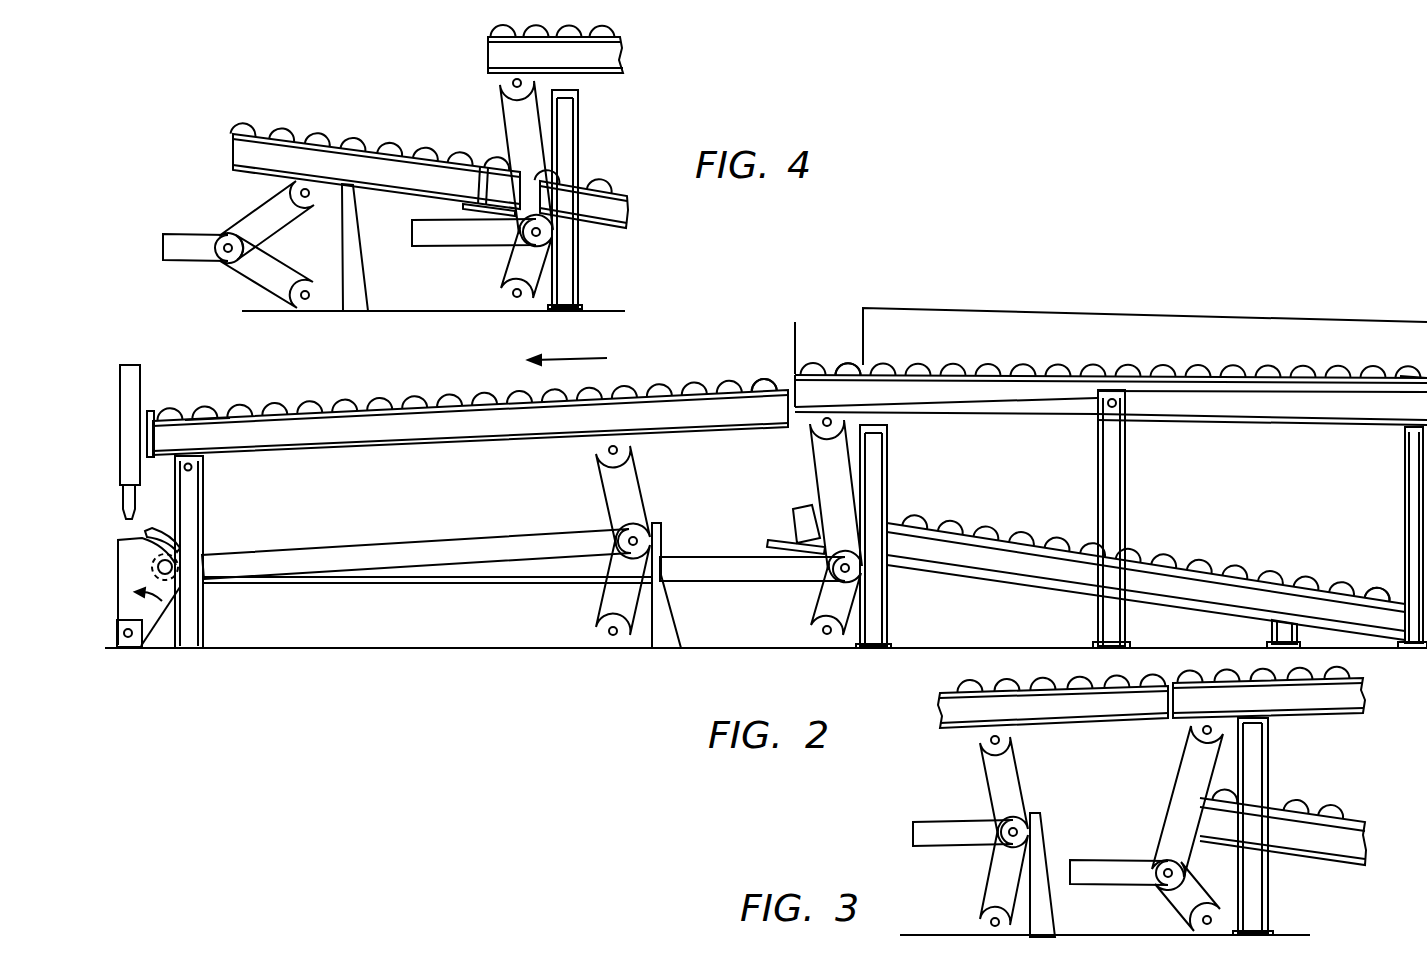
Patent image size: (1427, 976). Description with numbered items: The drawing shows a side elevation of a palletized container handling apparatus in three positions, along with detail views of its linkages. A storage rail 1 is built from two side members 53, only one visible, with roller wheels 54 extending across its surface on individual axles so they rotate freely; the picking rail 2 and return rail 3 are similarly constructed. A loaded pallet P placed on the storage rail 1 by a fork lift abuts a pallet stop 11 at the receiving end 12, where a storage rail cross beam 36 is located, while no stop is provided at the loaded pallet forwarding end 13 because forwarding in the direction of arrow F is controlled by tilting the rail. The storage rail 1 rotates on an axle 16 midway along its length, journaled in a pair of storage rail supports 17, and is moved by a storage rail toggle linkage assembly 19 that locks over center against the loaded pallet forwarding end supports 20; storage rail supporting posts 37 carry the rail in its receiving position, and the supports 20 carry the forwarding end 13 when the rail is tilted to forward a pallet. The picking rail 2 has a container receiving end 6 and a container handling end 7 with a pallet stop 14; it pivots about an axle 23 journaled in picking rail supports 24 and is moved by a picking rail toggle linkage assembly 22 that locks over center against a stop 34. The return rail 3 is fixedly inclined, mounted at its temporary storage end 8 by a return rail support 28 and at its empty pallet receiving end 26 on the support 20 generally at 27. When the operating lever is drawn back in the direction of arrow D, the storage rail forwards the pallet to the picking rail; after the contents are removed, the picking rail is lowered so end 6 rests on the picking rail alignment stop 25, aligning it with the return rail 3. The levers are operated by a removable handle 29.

In FIG. 4, the storage rail 1 is at (495, 49).
In FIG. 2, the storage rail 1 is at (1232, 410).
In FIG. 3, the storage rail 1 is at (1335, 700).
In FIG. 4, the picking rail 2 is at (256, 166).
In FIG. 2, the picking rail 2 is at (546, 428).
In FIG. 3, the picking rail 2 is at (1095, 705).
In FIG. 4, the return rail 3 is at (613, 207).
In FIG. 2, the return rail 3 is at (1023, 567).
In FIG. 3, the return rail 3 is at (1315, 845).
In FIG. 4, the container receiving end 6 is at (445, 178).
In FIG. 2, the container receiving end 6 is at (783, 390).
In FIG. 2, the container handling end 7 is at (205, 440).
In FIG. 2, the temporary storage end 8 is at (1395, 607).
In FIG. 2, the pallet stop 11 is at (1426, 352).
In FIG. 2, the receiving end 12 is at (1348, 412).
In FIG. 2, the loaded pallet forwarding end 13 is at (796, 336).
In FIG. 2, the pallet stop 14 is at (153, 418).
In FIG. 2, the axle 16 is at (1112, 400).
In FIG. 2, the storage rail support 17 is at (1100, 458).
In FIG. 4, the storage rail toggle linkage assembly 19 is at (518, 135).
In FIG. 2, the storage rail toggle linkage assembly 19 is at (570, 570).
In FIG. 3, the storage rail toggle linkage assembly 19 is at (1185, 780).
In FIG. 4, the loaded pallet forwarding end support 20 is at (573, 125).
In FIG. 2, the loaded pallet forwarding end support 20 is at (878, 473).
In FIG. 3, the loaded pallet forwarding end support 20 is at (1255, 773).
In FIG. 4, the picking rail toggle linkage assembly 22 is at (210, 240).
In FIG. 2, the picking rail toggle linkage assembly 22 is at (565, 538).
In FIG. 3, the picking rail toggle linkage assembly 22 is at (998, 775).
In FIG. 2, the axle 23 is at (198, 468).
In FIG. 2, the picking rail support 24 is at (200, 613).
In FIG. 4, the picking rail alignment stop 25 is at (470, 210).
In FIG. 2, the picking rail alignment stop 25 is at (775, 537).
In FIG. 2, the empty pallet receiving end 26 is at (803, 518).
In FIG. 2, the mounting location of return rail on support 27 is at (877, 568).
In FIG. 2, the return rail support 28 is at (1273, 630).
In FIG. 2, the handle 29 is at (134, 375).
In FIG. 2, the stop 34 is at (665, 628).
In FIG. 3, the stop 34 is at (1048, 920).
In FIG. 2, the storage rail cross beam 36 is at (1426, 400).
In FIG. 2, the storage rail supporting post 37 is at (1410, 485).
In FIG. 2, the side member 53 is at (1038, 400).
In FIG. 2, the roller wheel 54 is at (848, 370).
In FIG. 2, the loaded pallet P is at (1216, 336).
In FIG. 2, the forwarding direction arrow F is at (567, 349).
In FIG. 2, the lever drawing direction arrow D is at (148, 587).